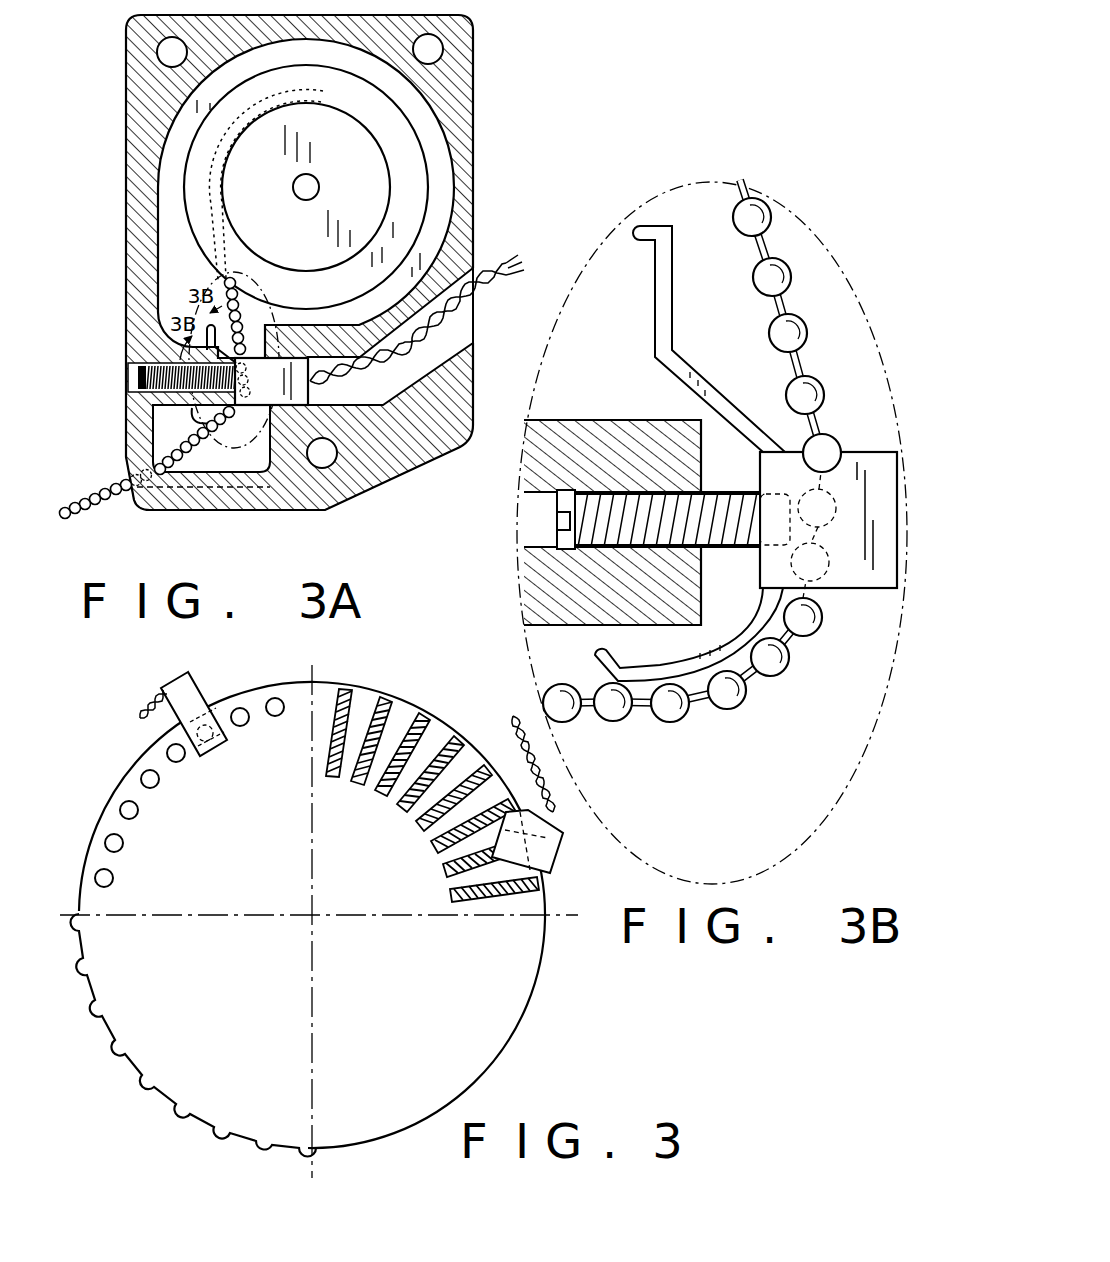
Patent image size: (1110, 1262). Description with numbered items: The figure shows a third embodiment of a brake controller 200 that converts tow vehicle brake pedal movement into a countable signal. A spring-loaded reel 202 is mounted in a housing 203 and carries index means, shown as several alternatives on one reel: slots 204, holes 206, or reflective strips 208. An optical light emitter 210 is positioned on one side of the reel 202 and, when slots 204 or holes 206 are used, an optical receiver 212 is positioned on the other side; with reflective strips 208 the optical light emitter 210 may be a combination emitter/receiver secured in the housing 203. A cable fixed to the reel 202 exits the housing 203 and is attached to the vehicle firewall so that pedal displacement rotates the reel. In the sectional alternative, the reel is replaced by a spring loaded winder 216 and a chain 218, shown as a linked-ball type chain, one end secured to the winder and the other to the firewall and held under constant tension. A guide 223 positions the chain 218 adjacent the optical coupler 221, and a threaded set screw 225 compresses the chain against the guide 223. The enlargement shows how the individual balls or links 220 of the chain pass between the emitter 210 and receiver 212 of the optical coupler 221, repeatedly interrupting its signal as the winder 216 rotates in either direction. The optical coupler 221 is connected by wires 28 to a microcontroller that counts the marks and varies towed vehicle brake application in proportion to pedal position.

In FIG. 3A, the brake controller 200 is at (103, 165).
In FIG. 3A, the housing 203 is at (453, 72).
In FIG. 3A, the spring loaded winder 216 is at (362, 180).
In FIG. 3A, the wires 28 is at (515, 274).
In FIG. 3, the wires 28 is at (142, 710).
In FIG. 3A, the threaded set screw 225 is at (138, 378).
In FIG. 3B, the threaded set screw 225 is at (583, 523).
In FIG. 3A, the guide 223 is at (196, 418).
In FIG. 3B, the guide 223 is at (698, 373).
In FIG. 3A, the chain 218 is at (85, 492).
In FIG. 3B, the chain 218 is at (665, 737).
In FIG. 3A, the optical light emitter 210 is at (260, 395).
In FIG. 3B, the optical light emitter 210 is at (868, 560).
In FIG. 3, the optical light emitter 210 is at (187, 697).
In FIG. 3A, the optical coupler 221 is at (290, 380).
In FIG. 3B, the optical coupler 221 is at (893, 600).
In FIG. 3B, the optical receiver 212 is at (828, 513).
In FIG. 3, the optical receiver 212 is at (195, 738).
In FIG. 3B, the balls or links 220 is at (818, 383).
In FIG. 3, the spring-loaded reel 202 is at (418, 1013).
In FIG. 3, the slots 204 is at (127, 1037).
In FIG. 3, the holes 206 is at (247, 726).
In FIG. 3, the reflective strips 208 is at (373, 790).